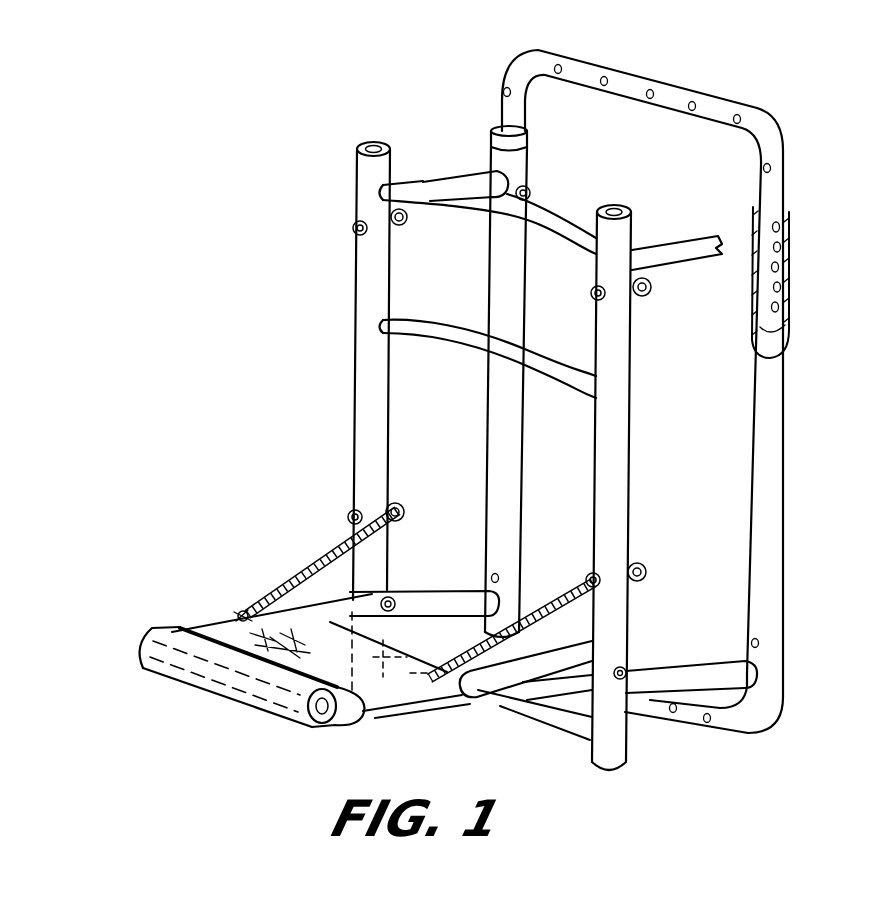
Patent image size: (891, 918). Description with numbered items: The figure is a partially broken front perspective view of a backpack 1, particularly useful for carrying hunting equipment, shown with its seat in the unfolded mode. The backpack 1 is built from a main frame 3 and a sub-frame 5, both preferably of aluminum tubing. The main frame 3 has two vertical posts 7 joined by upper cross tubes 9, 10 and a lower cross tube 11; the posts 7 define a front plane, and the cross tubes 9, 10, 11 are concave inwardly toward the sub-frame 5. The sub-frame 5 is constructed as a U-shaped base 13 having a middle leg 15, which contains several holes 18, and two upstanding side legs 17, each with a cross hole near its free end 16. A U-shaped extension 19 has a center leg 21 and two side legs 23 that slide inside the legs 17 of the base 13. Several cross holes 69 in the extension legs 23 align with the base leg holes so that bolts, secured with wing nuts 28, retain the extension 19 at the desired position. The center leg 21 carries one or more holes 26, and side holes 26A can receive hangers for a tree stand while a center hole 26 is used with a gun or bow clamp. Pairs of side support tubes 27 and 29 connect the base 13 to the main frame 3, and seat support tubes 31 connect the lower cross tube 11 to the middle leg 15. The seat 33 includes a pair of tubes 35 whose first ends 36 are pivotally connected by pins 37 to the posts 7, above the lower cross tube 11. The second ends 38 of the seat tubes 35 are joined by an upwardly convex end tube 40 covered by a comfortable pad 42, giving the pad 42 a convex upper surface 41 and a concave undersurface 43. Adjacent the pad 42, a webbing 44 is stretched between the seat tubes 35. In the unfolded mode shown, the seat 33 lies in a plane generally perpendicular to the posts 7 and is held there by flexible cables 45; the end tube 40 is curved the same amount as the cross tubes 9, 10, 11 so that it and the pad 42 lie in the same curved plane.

The backpack 1 is at (338, 150).
The main frame 3 is at (350, 316).
The sub-frame 5 is at (795, 377).
The vertical post 7 is at (367, 272).
The upper cross tube 9 is at (418, 327).
The upper cross tube 10 is at (402, 182).
The lower cross tube 11 is at (580, 722).
The U-shaped base 13 is at (790, 514).
The middle leg 15 is at (692, 723).
The free end 16 is at (790, 210).
The side leg 17 is at (760, 443).
The holes 18 is at (708, 722).
The U-shaped extension 19 is at (790, 128).
The center leg 21 is at (716, 110).
The extension side leg 23 is at (776, 182).
The holes 26 is at (688, 108).
The side holes 26A is at (543, 52).
The side support tube 27 is at (690, 676).
The wing nut 28 is at (528, 190).
The side support tube 29 is at (700, 247).
The seat support tube 31 is at (580, 727).
The seat 33 is at (445, 708).
The seat tube 35 is at (438, 602).
The first end 36 is at (424, 565).
The pin 37 is at (632, 672).
The second end 38 is at (327, 712).
The end tube 40 is at (207, 686).
The convex upper surface 41 is at (168, 630).
The pad 42 is at (287, 710).
The concave undersurface 43 is at (228, 692).
The webbing 44 is at (212, 625).
The flexible cable 45 is at (343, 547).
The cross holes 69 is at (783, 242).